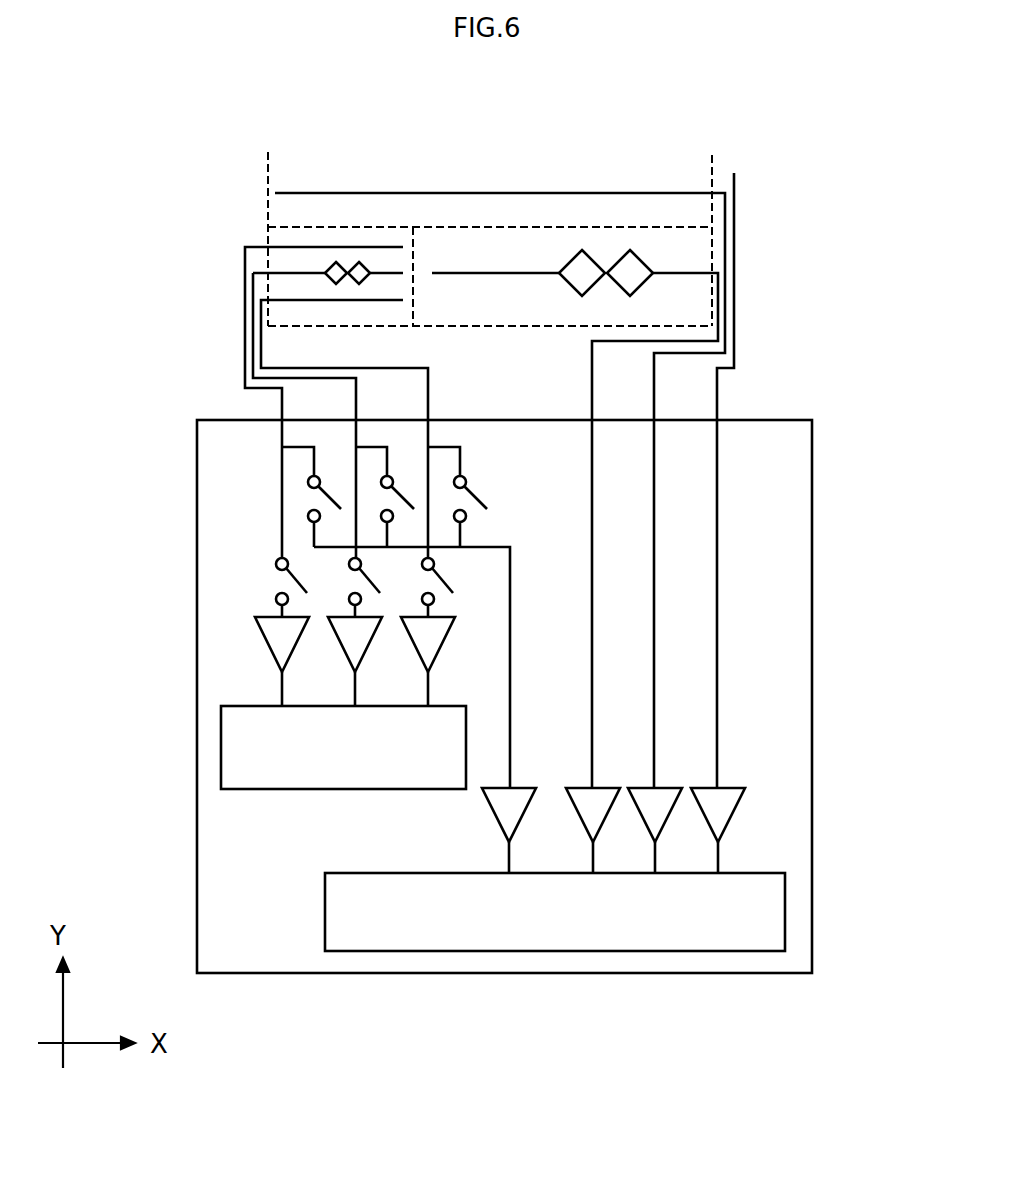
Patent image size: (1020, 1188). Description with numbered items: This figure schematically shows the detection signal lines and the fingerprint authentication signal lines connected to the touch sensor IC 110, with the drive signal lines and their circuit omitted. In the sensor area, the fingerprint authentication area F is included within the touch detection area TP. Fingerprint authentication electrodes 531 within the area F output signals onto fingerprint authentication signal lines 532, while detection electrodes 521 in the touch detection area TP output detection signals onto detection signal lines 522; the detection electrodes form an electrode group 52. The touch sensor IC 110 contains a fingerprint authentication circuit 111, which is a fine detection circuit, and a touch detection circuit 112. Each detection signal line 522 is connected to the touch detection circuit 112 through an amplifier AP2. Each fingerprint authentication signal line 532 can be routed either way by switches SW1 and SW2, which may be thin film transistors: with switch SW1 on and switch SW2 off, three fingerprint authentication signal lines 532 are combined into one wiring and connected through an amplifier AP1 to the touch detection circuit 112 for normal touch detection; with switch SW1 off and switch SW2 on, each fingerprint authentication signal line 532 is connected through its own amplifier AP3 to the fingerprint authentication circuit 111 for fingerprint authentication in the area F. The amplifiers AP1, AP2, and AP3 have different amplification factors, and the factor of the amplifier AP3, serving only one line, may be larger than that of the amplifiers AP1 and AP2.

The fingerprint authentication signal line 532 is at (258, 247).
The fingerprint authentication electrode 531 is at (340, 266).
The detection signal line 522 is at (510, 273).
The detection electrode 521 is at (588, 258).
The touch detection area TP is at (715, 169).
The fingerprint authentication area F is at (415, 307).
The switch SW1 is at (487, 475).
The switch SW2 is at (272, 575).
The detection electrode group 52 is at (730, 555).
The touch sensor IC 110 is at (812, 553).
The amplifier AP3 is at (296, 645).
The fingerprint authentication circuit 111 is at (263, 793).
The amplifier AP1 is at (522, 787).
The amplifier AP2 is at (598, 787).
The touch detection circuit 112 is at (785, 912).